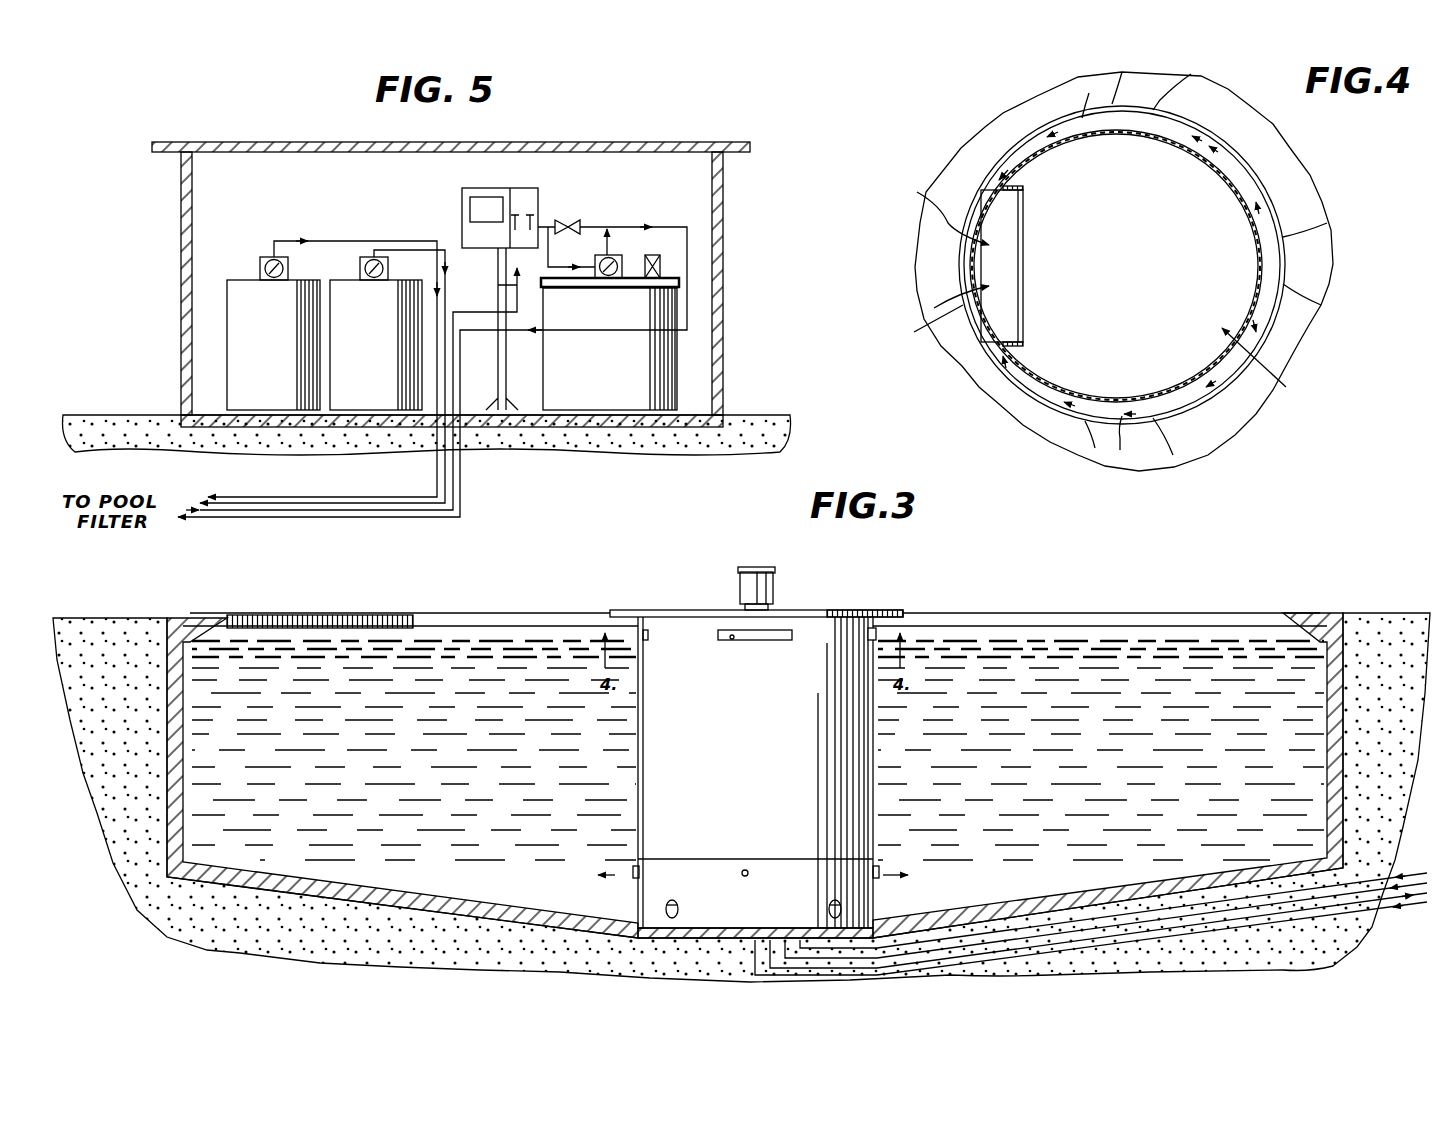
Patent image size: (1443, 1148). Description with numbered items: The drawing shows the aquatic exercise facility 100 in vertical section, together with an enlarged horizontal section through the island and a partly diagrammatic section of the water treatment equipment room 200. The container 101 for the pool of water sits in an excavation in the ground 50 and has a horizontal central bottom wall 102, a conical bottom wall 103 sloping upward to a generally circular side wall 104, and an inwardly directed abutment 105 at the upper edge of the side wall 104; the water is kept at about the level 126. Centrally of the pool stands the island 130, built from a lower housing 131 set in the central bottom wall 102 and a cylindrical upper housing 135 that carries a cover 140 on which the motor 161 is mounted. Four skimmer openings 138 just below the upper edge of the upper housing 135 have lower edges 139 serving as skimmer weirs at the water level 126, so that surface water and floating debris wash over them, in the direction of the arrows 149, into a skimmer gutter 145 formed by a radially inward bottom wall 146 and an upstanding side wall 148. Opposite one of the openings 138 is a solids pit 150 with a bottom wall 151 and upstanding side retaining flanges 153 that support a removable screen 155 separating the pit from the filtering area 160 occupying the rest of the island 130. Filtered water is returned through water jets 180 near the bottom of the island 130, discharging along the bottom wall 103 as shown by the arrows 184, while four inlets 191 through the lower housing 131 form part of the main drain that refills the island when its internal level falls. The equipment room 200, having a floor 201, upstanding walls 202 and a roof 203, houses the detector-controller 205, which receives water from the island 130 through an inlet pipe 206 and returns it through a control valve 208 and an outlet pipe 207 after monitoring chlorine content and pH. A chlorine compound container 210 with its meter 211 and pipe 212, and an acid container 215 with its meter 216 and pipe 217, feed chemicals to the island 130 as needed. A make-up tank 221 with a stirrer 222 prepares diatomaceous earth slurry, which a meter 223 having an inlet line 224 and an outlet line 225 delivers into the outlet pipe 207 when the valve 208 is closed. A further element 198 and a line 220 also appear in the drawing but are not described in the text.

In FIG. 5, the ground 50 is at (114, 425).
In FIG. 3, the ground 50 is at (1378, 620).
In FIG. 3, the aquatic exercise facility 100 is at (148, 582).
In FIG. 3, the container 101 is at (322, 604).
In FIG. 3, the central bottom wall 102 is at (705, 938).
In FIG. 3, the bottom wall 103 is at (322, 884).
In FIG. 3, the side wall 104 is at (178, 752).
In FIG. 3, the inwardly directed abutment 105 is at (207, 628).
In FIG. 4, the water level 126 is at (951, 354).
In FIG. 3, the water level 126 is at (450, 642).
In FIG. 3, the island 130 is at (663, 575).
In FIG. 3, the lower housing 131 is at (875, 891).
In FIG. 4, the upper housing 135 is at (1006, 154).
In FIG. 3, the upper housing 135 is at (875, 762).
In FIG. 4, the skimmer openings 138 is at (1130, 118).
In FIG. 3, the skimmer openings 138 is at (732, 640).
In FIG. 4, the lower edge 139 is at (900, 269).
In FIG. 3, the cover 140 is at (622, 608).
In FIG. 4, the skimmer gutter 145 is at (1205, 135).
In FIG. 4, the bottom wall 146 is at (1245, 176).
In FIG. 4, the upstanding side wall 148 is at (1262, 232).
In FIG. 4, the arrows 149 is at (1064, 448).
In FIG. 4, the solids pit 150 is at (1000, 263).
In FIG. 4, the bottom wall 151 is at (1005, 298).
In FIG. 4, the upstanding side retaining flanges 153 is at (1022, 189).
In FIG. 4, the removable screen 155 is at (1025, 312).
In FIG. 4, the filtering area 160 is at (1270, 363).
In FIG. 3, the motor 161 is at (775, 586).
In FIG. 3, the water jets 180 is at (742, 871).
In FIG. 3, the arrows 184 is at (612, 868).
In FIG. 3, the inlets 191 is at (680, 904).
In FIG. 3, the drain inlets 198 is at (658, 908).
In FIG. 5, the water treatment equipment room 200 is at (180, 140).
In FIG. 5, the floor 201 is at (655, 422).
In FIG. 5, the upstanding walls 202 is at (181, 232).
In FIG. 5, the roof 203 is at (562, 141).
In FIG. 5, the detector-controller 205 is at (478, 187).
In FIG. 5, the inlet pipe 206 is at (498, 285).
In FIG. 3, the inlet pipe 206 is at (1225, 920).
In FIG. 5, the outlet pipe 207 is at (674, 222).
In FIG. 3, the outlet pipe 207 is at (1312, 912).
In FIG. 5, the control valve 208 is at (562, 222).
In FIG. 5, the chlorine compound container 210 is at (227, 322).
In FIG. 5, the meter 211 is at (261, 260).
In FIG. 5, the pipe 212 is at (330, 240).
In FIG. 3, the pipe 212 is at (1150, 926).
In FIG. 5, the acid container 215 is at (385, 320).
In FIG. 5, the meter 216 is at (360, 266).
In FIG. 5, the pipe 217 is at (410, 249).
In FIG. 3, the pipe 217 is at (1086, 934).
In FIG. 5, the line 220 is at (694, 310).
In FIG. 5, the make-up tank 221 is at (672, 372).
In FIG. 5, the stirrer 222 is at (665, 262).
In FIG. 5, the meter 223 is at (622, 258).
In FIG. 5, the inlet line 224 is at (550, 264).
In FIG. 5, the outlet line 225 is at (602, 240).